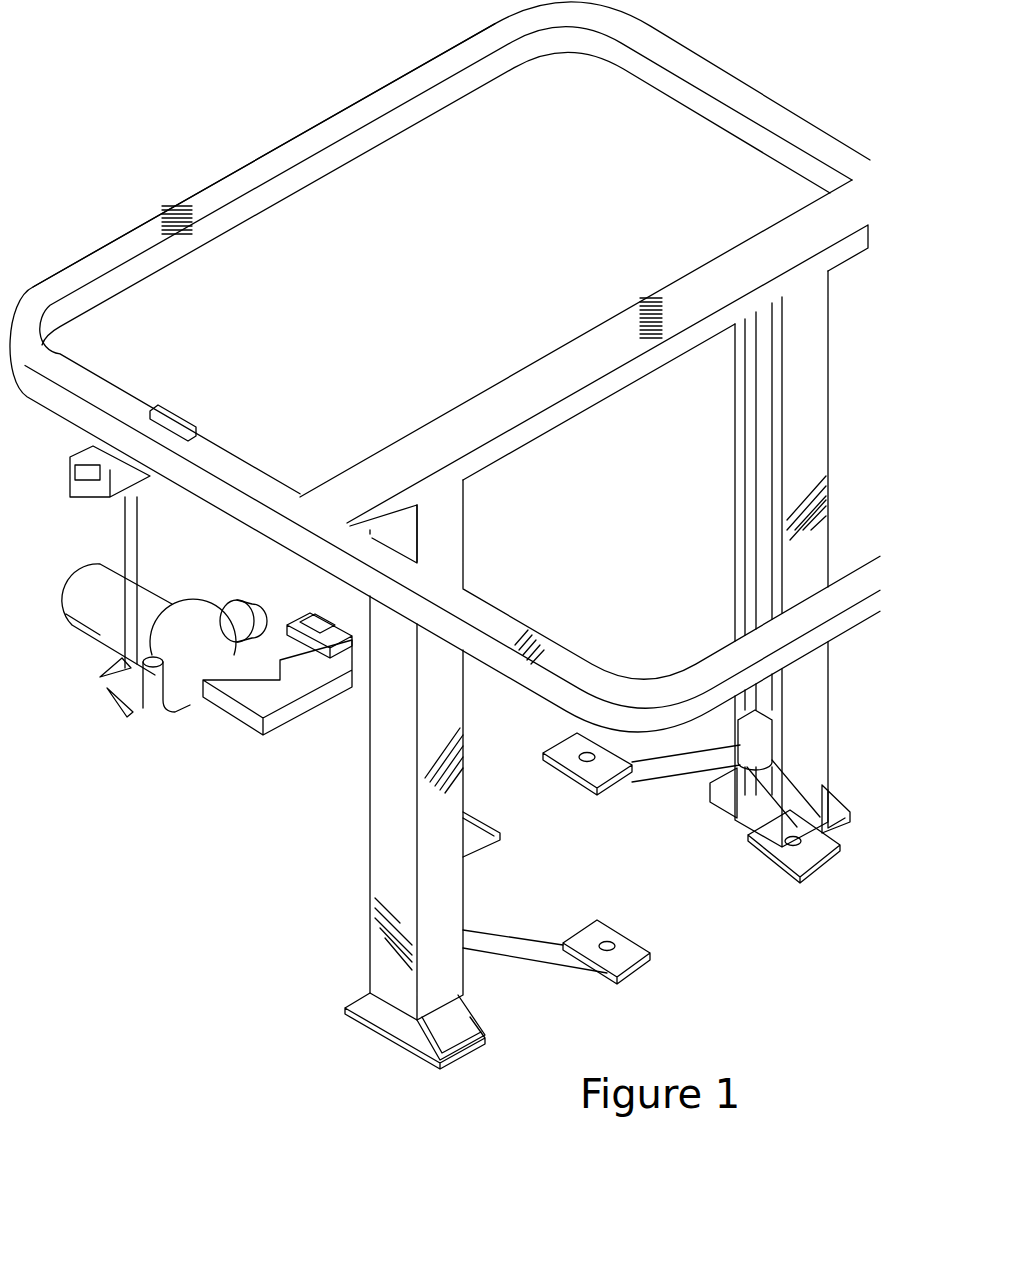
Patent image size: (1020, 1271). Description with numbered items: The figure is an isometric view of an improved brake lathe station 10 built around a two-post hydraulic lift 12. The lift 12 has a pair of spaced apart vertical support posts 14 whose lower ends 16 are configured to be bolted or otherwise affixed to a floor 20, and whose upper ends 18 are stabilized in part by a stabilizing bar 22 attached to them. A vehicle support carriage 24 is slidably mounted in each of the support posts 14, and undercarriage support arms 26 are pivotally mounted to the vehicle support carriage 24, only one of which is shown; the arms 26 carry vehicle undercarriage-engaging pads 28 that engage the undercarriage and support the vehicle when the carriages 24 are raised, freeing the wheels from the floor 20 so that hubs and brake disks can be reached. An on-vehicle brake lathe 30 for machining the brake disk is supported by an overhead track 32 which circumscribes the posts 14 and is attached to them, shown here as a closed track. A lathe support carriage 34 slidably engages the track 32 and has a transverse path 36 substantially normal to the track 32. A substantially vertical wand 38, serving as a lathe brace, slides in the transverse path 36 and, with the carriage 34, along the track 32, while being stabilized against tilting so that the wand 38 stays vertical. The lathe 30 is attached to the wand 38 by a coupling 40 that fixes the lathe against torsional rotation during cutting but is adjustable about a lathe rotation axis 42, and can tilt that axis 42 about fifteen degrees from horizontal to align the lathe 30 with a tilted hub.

The brake lathe station 10 is at (195, 140).
The two-post hydraulic lift 12 is at (582, 303).
The vertical support posts 14 is at (370, 827).
The lower ends 16 is at (392, 1018).
The upper ends 18 is at (441, 518).
The floor 20 is at (641, 829).
The stabilizing bar 22 is at (480, 415).
The vehicle support carriage 24 is at (747, 738).
The undercarriage support arms 26 is at (770, 800).
The vehicle undercarriage-engaging pads 28 is at (603, 930).
The on-vehicle brake lathe 30 is at (200, 722).
The overhead track 32 is at (348, 118).
The lathe support carriage 34 is at (185, 407).
The transverse path 36 is at (82, 482).
The substantially vertical wand 38 is at (132, 540).
The coupling 40 is at (96, 653).
The lathe rotation axis 42 is at (263, 606).